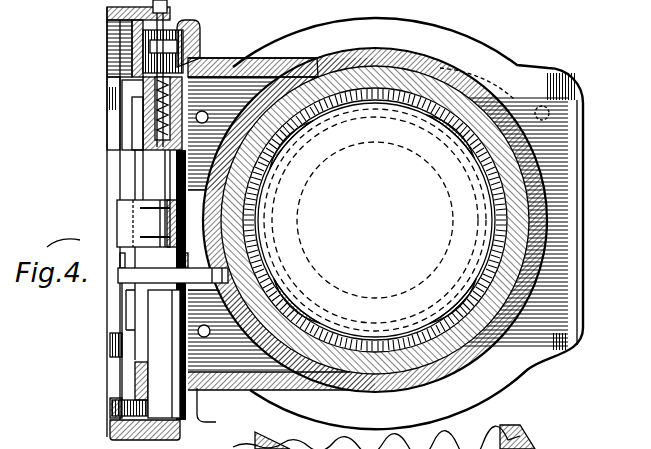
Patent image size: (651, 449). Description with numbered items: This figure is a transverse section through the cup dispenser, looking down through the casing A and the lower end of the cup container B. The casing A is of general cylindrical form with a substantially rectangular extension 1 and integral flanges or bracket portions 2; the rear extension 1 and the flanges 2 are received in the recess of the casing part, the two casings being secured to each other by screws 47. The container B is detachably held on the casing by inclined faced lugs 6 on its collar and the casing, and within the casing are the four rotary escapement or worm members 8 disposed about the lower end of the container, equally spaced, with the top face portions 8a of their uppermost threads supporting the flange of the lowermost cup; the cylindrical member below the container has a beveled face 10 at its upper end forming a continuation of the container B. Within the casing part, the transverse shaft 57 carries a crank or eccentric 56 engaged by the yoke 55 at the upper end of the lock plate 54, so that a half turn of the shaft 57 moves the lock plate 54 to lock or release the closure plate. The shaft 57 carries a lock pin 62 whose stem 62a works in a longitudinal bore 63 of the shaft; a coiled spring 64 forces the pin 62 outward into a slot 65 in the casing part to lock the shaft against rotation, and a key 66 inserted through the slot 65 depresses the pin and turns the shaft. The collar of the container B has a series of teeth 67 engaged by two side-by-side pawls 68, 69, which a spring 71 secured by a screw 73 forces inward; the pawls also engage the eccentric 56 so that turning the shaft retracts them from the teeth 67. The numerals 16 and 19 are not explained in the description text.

The rectangular extension 1 is at (585, 258).
The flange or bracket portion 2 is at (219, 60).
The inclined faced lug 6 is at (265, 222).
The rotary escapement or worm member 8 is at (427, 130).
The top face portion 8a is at (300, 144).
The beveled face 10 is at (267, 257).
The bracket foot 16 is at (145, 434).
The cover flange 19 is at (553, 113).
The screw 47 is at (133, 70).
The lock plate 54 is at (137, 160).
The yoke 55 is at (123, 222).
The crank or eccentric 56 is at (153, 200).
The transverse shaft 57 is at (173, 286).
The lock pin 62 is at (108, 96).
The stem 62a is at (150, 137).
The longitudinal bore 63 is at (236, 60).
The coiled spring 64 is at (150, 113).
The slot 65 is at (118, 10).
The key 66 is at (175, 18).
The teeth 67 is at (493, 128).
The pawl 68 is at (120, 283).
The pawl 69 is at (122, 273).
The spring 71 is at (120, 312).
The screw 73 is at (115, 402).
The casing A is at (517, 63).
The cup container B is at (487, 222).